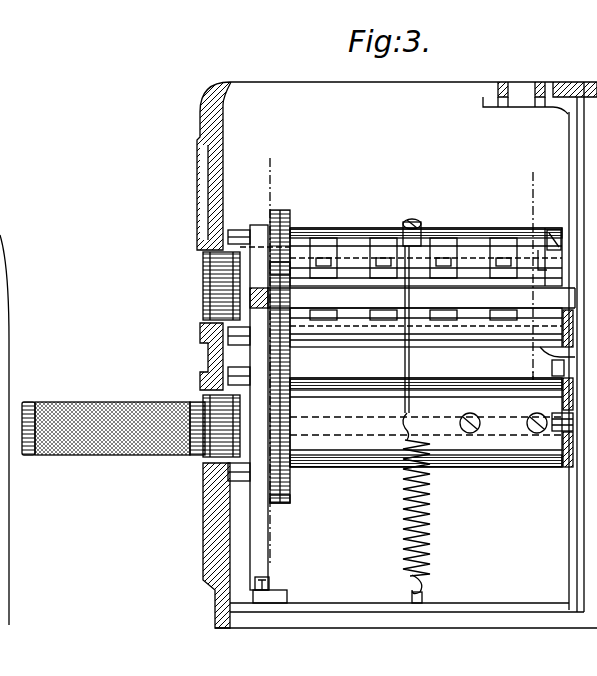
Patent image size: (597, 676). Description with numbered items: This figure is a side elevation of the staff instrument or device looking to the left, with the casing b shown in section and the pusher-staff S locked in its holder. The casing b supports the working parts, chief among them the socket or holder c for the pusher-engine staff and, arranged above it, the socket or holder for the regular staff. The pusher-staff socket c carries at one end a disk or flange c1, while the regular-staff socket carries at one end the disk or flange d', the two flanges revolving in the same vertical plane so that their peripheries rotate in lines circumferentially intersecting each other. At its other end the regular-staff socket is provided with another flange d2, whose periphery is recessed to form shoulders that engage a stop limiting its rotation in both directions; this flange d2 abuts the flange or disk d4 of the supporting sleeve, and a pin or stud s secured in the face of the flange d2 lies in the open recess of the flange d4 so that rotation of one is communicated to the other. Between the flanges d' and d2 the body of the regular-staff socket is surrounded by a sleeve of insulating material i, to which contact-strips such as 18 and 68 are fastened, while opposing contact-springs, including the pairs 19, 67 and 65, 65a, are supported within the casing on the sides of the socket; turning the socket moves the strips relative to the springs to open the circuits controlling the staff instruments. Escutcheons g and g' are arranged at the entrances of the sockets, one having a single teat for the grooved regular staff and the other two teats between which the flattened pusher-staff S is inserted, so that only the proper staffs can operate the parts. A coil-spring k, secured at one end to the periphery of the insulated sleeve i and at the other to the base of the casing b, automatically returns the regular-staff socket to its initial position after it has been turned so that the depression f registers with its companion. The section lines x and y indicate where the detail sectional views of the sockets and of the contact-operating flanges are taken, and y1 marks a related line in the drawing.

The casing b is at (200, 103).
The section line x x is at (276, 172).
The section line y y is at (540, 187).
The axis y1 is at (522, 374).
The pusher-staff S is at (133, 452).
The escutcheon g is at (204, 286).
The escutcheon g' is at (201, 412).
The disk or flange d' is at (259, 390).
The disk or flange c1 is at (285, 505).
The depression f is at (280, 272).
The pin or stud s is at (421, 297).
The contact-spring 65a is at (327, 243).
The contact-strip 18 is at (380, 232).
The contact-spring 19 is at (413, 228).
The contact-spring 65 is at (445, 242).
The contact-strip 68 is at (493, 243).
The contact-spring 67 is at (528, 234).
The sleeve of insulating material i is at (470, 337).
The flange d2 is at (540, 347).
The flange or disk d4 is at (575, 356).
The socket or holder c is at (378, 467).
The coil-spring k is at (430, 502).